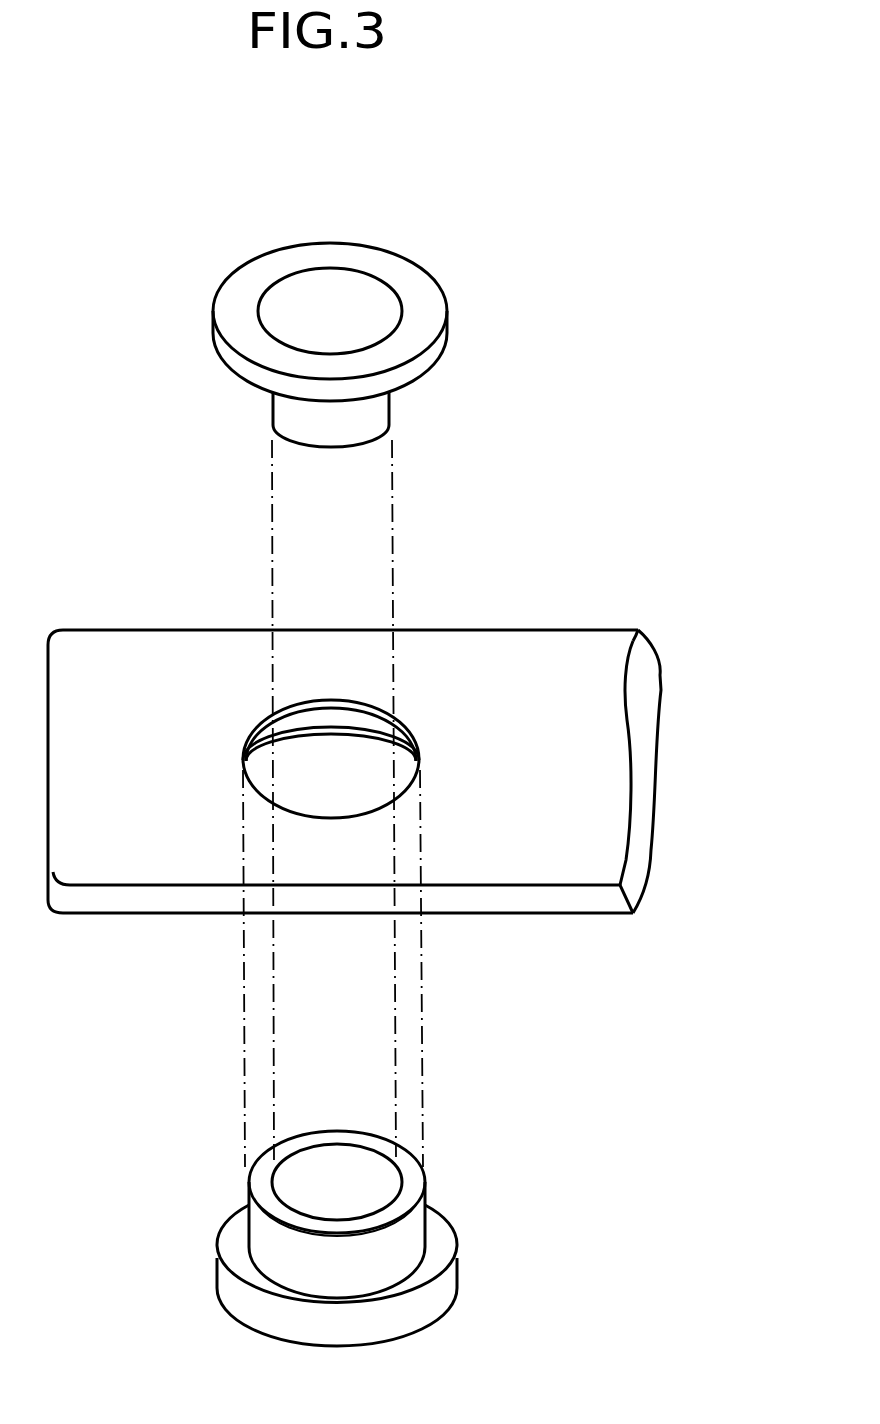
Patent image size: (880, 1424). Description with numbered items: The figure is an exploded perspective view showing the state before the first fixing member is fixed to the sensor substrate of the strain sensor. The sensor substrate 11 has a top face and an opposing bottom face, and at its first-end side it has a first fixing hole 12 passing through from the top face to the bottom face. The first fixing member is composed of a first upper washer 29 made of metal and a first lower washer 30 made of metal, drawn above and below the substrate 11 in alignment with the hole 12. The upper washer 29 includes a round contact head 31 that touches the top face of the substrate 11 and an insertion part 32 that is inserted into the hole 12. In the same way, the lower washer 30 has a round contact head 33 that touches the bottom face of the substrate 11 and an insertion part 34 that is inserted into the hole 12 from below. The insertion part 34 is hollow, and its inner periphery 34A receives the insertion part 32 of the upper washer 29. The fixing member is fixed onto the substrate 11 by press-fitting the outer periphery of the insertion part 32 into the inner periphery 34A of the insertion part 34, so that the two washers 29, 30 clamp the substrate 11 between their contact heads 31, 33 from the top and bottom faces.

The sensor substrate 11 is at (525, 680).
The first fixing hole 12 is at (345, 700).
The first upper washer 29 is at (427, 302).
The first lower washer 30 is at (440, 1258).
The round contact head 31 is at (372, 265).
The insertion part 32 is at (298, 423).
The round contact head 33 is at (443, 1242).
The insertion part 34 is at (413, 1232).
The inner periphery 34A is at (380, 1153).